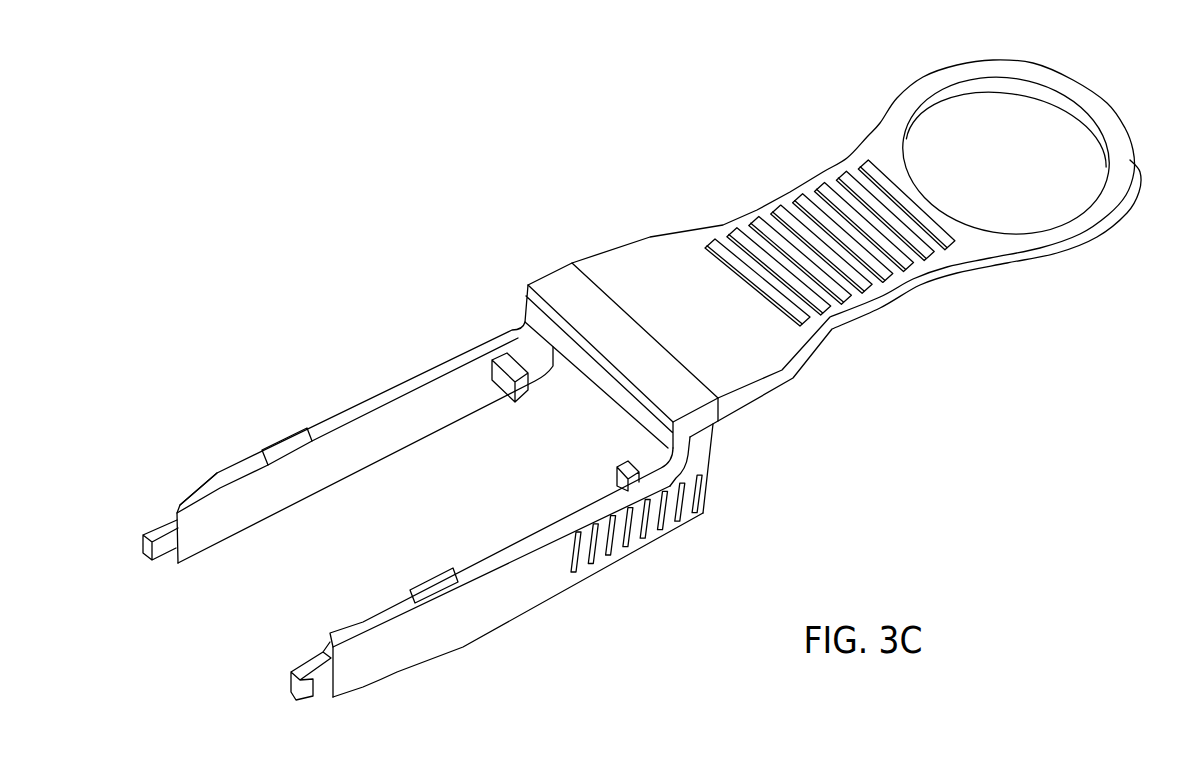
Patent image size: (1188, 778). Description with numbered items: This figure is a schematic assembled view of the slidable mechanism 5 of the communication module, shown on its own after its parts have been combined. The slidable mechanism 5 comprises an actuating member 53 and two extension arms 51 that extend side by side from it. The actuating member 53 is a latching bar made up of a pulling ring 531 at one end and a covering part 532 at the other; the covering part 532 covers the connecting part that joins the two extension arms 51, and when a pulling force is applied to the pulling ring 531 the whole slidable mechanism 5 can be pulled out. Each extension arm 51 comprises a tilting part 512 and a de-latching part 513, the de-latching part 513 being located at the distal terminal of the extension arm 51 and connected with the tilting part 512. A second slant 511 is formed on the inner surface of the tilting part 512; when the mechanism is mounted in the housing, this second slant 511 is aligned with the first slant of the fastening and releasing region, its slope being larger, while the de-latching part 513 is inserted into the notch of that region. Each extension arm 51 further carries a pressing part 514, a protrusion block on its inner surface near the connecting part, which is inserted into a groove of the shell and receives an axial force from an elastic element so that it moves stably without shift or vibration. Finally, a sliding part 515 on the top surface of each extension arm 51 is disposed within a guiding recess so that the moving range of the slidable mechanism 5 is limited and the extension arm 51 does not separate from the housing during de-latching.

The slidable mechanism 5 is at (1163, 48).
The actuating member 53 is at (675, 250).
The pulling ring 531 is at (948, 80).
The covering part 532 is at (558, 285).
The extension arm 51 is at (362, 420).
The second slant 511 is at (227, 527).
The tilting part 512 is at (198, 495).
The de-latching part 513 is at (158, 557).
The pressing part 514 is at (522, 389).
The sliding part 515 is at (283, 440).